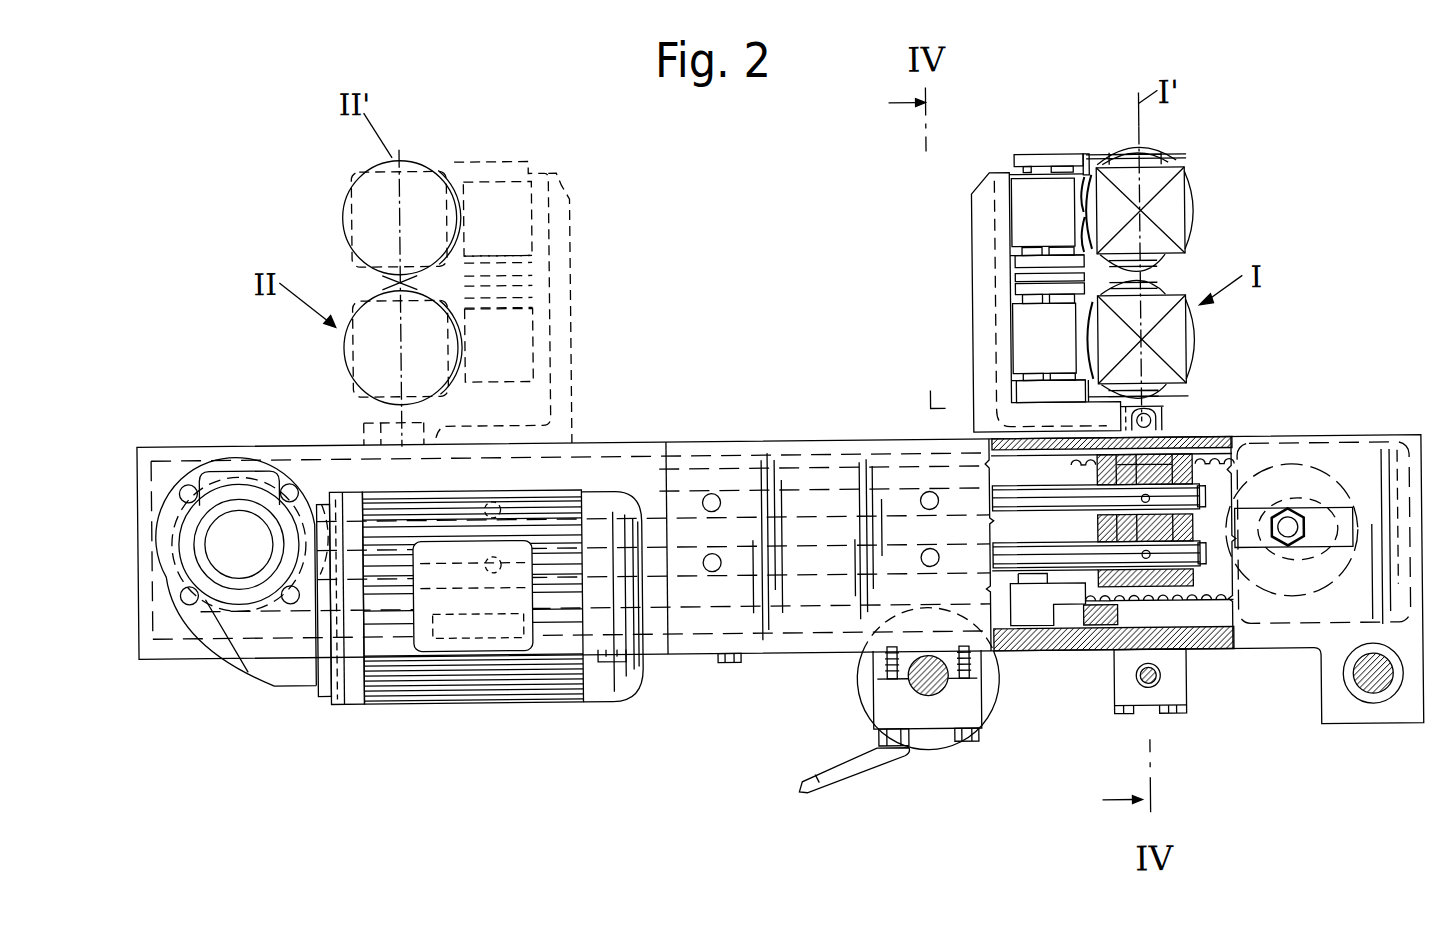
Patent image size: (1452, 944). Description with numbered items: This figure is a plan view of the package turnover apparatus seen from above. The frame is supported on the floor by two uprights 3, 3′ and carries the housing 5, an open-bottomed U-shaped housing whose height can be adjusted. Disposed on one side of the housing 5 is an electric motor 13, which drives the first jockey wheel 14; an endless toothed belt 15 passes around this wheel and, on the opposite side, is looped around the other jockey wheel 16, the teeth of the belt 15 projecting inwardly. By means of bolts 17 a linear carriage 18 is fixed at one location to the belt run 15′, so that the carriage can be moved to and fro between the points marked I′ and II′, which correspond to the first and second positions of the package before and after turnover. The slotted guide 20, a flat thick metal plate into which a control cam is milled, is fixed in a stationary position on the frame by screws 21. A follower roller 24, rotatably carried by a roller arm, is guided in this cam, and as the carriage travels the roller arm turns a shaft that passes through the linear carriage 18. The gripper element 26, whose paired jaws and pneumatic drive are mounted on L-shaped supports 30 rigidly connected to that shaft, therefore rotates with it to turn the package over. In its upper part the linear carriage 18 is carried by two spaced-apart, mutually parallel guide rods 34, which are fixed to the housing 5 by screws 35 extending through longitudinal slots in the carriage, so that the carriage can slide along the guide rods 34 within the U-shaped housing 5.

The upright 3 is at (929, 716).
The upright 3' is at (1374, 733).
The housing 5 is at (297, 447).
The electric motor 13 is at (523, 684).
The first jockey wheel 14 is at (202, 462).
The endless toothed belt 15 is at (1158, 449).
The belt run 15' is at (790, 606).
The other jockey wheel 16 is at (1308, 472).
The bolts 17 is at (1192, 440).
The linear carriage 18 is at (1127, 588).
The slotted guide 20 is at (808, 622).
The screws 21 is at (718, 662).
The follower roller 24 is at (1025, 619).
The gripper element 26 is at (989, 258).
The support 30 is at (563, 201).
The guide rods 34 is at (677, 562).
The screws 35 is at (718, 568).